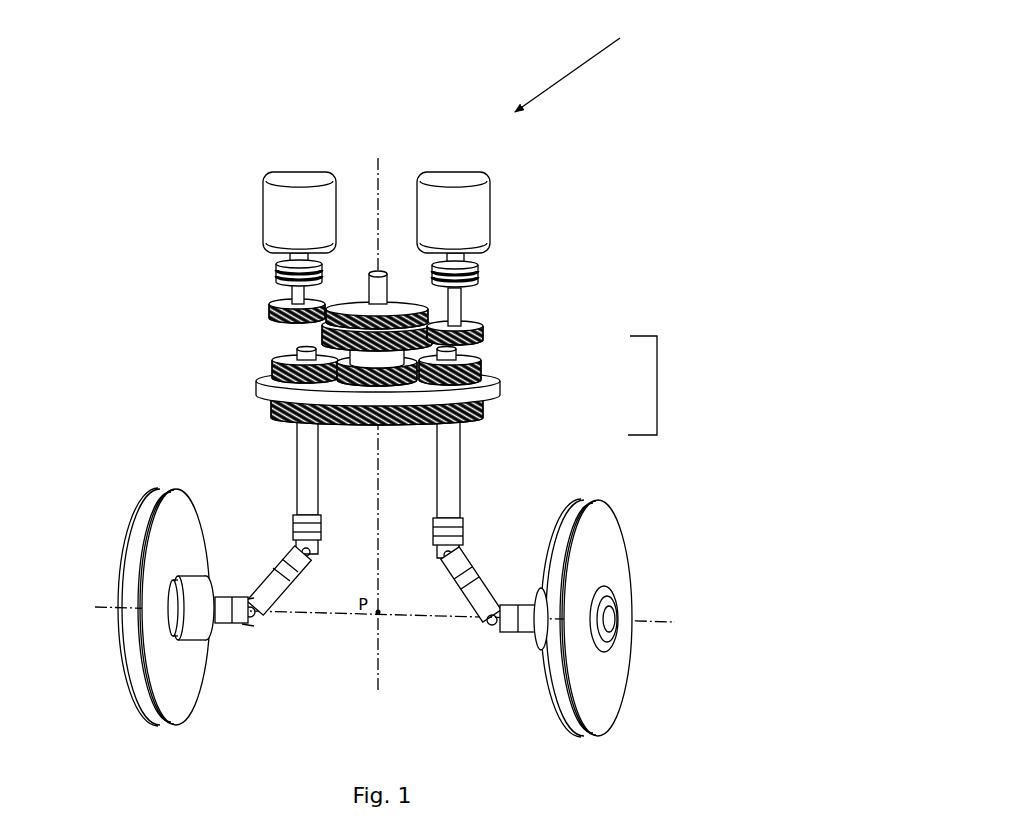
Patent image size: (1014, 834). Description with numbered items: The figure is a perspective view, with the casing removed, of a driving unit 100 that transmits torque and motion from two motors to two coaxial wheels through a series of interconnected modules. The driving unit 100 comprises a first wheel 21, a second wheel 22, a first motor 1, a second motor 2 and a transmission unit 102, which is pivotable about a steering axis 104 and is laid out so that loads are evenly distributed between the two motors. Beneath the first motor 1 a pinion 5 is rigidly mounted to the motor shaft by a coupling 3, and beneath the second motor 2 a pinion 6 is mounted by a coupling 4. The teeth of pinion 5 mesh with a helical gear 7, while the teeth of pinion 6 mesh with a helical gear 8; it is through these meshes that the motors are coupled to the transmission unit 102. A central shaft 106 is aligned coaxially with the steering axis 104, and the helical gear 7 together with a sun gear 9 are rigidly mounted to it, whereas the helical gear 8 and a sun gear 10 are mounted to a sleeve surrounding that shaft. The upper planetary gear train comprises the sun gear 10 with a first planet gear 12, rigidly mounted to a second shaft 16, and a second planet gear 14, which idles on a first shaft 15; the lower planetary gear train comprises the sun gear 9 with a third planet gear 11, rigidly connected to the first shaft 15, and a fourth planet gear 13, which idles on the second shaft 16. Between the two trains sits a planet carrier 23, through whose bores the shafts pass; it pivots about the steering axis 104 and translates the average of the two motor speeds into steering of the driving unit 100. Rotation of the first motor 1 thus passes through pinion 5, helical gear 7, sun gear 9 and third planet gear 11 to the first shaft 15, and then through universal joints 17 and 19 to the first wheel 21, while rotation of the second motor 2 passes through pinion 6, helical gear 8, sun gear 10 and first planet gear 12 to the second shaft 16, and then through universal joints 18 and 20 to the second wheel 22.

The first motor 1 is at (298, 207).
The second motor 2 is at (465, 212).
The coupling 3 is at (276, 268).
The coupling 4 is at (478, 272).
The pinion 5 is at (281, 306).
The pinion 6 is at (478, 327).
The helical gear 7 is at (343, 303).
The helical gear 8 is at (330, 342).
The sun gear 9 is at (387, 426).
The sun gear 10 is at (480, 337).
The third planet gear 11 is at (478, 420).
The first planet gear 12 is at (275, 363).
The fourth planet gear 13 is at (286, 416).
The second planet gear 14 is at (482, 370).
The first shaft 15 is at (450, 476).
The second shaft 16 is at (305, 480).
The universal joint 17 is at (455, 547).
The universal joint 18 is at (300, 550).
The universal joint 19 is at (490, 627).
The universal joint 20 is at (257, 625).
The first wheel 21 is at (610, 560).
The second wheel 22 is at (137, 558).
The planet carrier 23 is at (500, 392).
The driving unit 100 is at (587, 65).
The transmission unit 102 is at (664, 385).
The steering axis 104 is at (379, 166).
The central shaft 106 is at (382, 272).